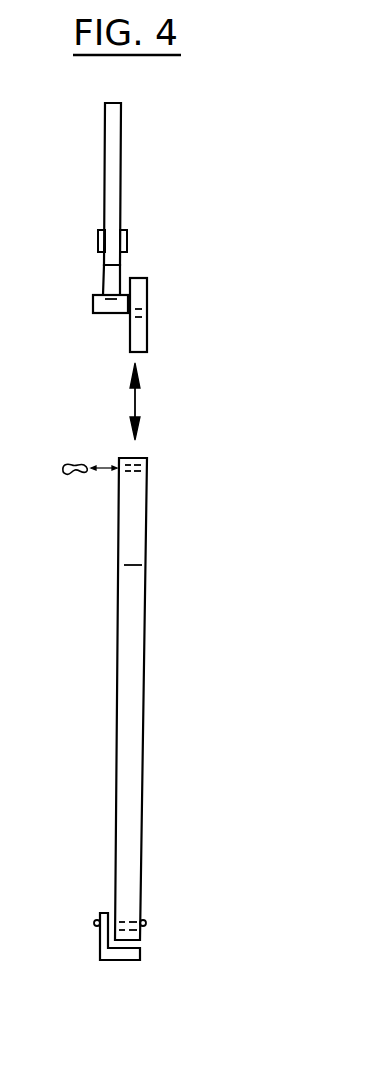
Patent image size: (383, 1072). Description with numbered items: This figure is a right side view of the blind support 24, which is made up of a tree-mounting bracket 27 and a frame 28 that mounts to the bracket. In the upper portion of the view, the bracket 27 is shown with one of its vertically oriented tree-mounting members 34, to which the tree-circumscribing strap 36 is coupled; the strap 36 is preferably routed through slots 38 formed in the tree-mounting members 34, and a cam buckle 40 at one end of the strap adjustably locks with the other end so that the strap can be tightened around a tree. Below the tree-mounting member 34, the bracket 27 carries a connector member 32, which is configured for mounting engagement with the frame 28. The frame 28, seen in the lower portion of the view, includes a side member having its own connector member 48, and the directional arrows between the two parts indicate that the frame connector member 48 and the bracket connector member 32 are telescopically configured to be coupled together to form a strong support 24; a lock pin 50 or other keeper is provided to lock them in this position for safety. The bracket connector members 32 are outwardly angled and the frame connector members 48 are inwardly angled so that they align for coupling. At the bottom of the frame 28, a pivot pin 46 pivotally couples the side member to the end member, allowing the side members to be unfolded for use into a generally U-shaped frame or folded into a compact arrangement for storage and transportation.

The blind support 24 is at (167, 186).
The tree-mounting bracket 27 is at (139, 291).
The frame 28 is at (138, 709).
The connector member 32 is at (147, 325).
The tree-mounting member 34 is at (112, 318).
The tree-circumscribing strap 36 is at (122, 180).
The slot 38 is at (93, 309).
The cam buckle 40 is at (131, 238).
The pivot pin 46 is at (96, 922).
The connector member 48 is at (147, 512).
The lock pin 50 is at (72, 478).